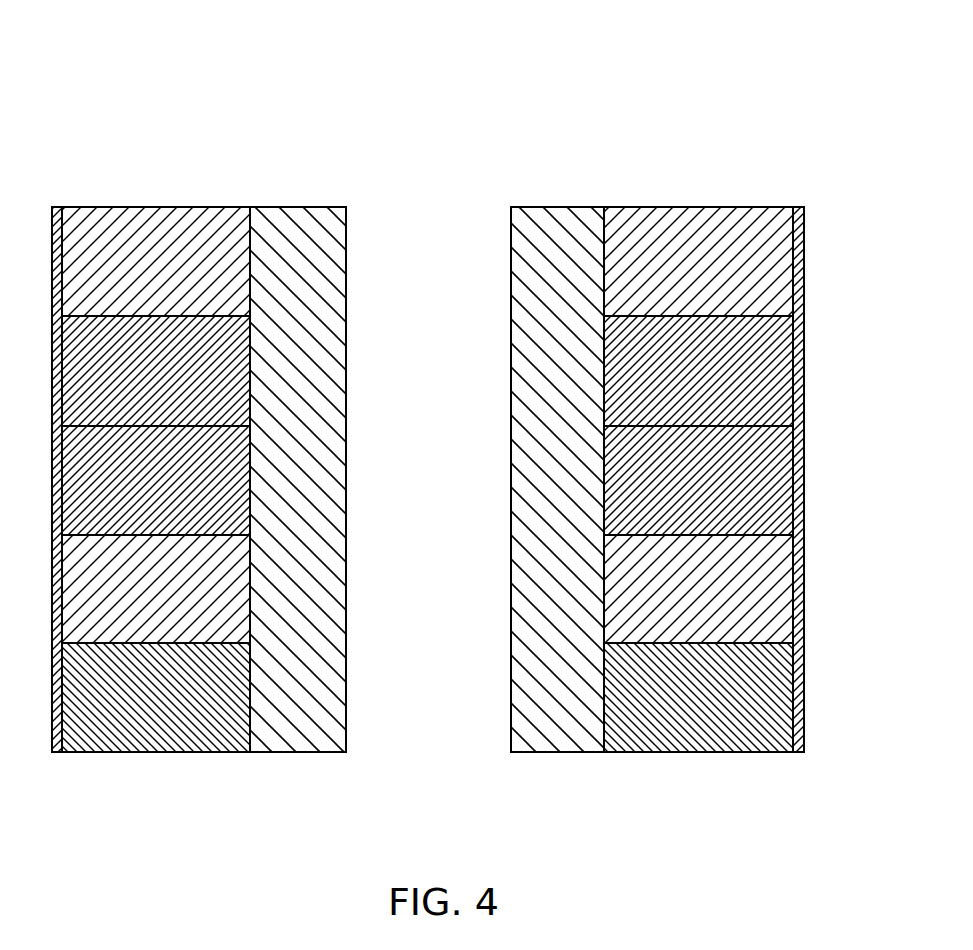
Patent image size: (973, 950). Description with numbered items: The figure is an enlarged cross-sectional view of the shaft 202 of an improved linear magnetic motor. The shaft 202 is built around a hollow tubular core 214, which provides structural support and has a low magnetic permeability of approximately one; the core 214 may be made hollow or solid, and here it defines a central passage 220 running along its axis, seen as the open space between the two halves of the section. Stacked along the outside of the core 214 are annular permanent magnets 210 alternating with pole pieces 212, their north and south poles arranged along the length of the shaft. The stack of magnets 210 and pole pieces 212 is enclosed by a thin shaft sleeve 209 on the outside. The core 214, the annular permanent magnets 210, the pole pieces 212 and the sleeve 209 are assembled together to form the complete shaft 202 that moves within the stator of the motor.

The linear magnetic motor shaft assembly 202 is at (348, 94).
The sleeve 209 is at (809, 296).
The annular permanent magnets 210 is at (767, 244).
The pole pieces 212 is at (767, 340).
The hollow tubular core 214 is at (524, 293).
The central passage 220 is at (424, 750).